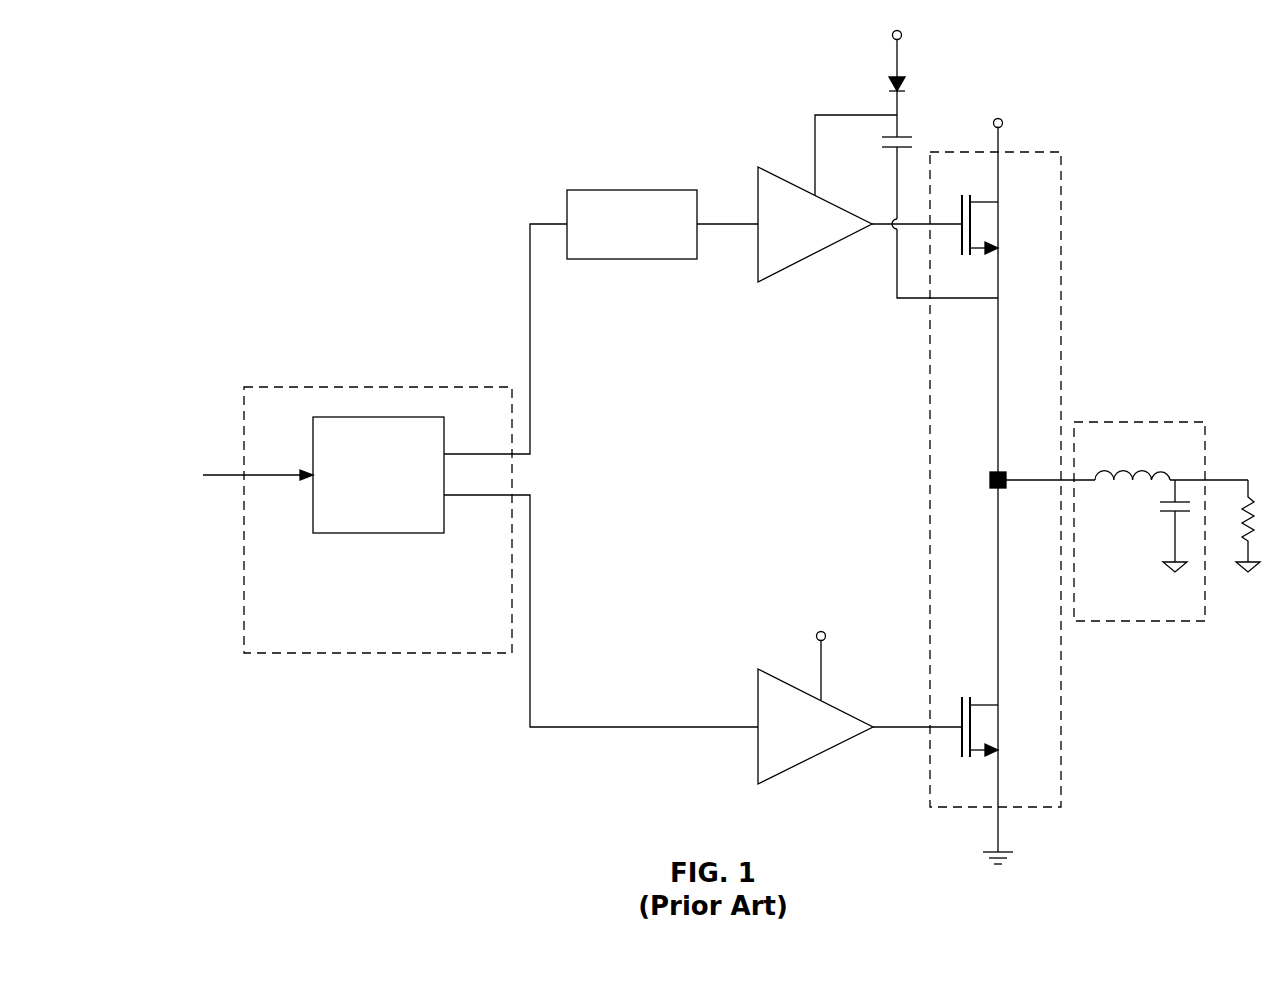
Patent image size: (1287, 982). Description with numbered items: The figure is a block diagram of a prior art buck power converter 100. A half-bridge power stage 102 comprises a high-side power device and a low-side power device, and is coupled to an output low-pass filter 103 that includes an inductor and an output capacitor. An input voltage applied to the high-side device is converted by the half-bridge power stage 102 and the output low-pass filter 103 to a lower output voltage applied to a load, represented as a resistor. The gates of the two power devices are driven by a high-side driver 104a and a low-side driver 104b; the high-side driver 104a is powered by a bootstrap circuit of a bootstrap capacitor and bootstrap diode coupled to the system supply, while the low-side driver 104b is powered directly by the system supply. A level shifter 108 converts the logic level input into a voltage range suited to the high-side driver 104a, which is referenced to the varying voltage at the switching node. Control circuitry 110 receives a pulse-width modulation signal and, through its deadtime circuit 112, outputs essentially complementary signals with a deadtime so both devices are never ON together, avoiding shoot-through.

The buck power converter 100 is at (160, 69).
The half-bridge power stage 102 is at (1061, 152).
The output low-pass filter 103 is at (1130, 422).
The high-side driver 104a is at (830, 258).
The low-side driver 104b is at (830, 760).
The level shifter 108 is at (614, 190).
The control circuitry 110 is at (382, 387).
The deadtime circuit 112 is at (378, 533).